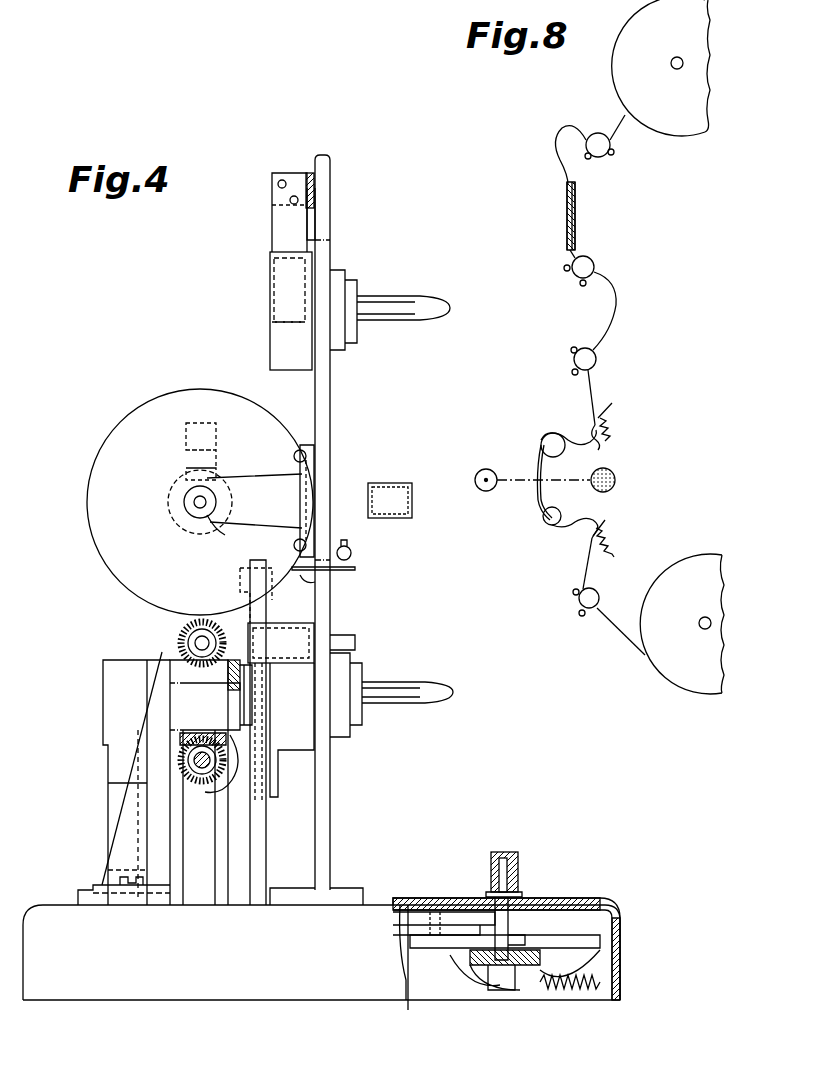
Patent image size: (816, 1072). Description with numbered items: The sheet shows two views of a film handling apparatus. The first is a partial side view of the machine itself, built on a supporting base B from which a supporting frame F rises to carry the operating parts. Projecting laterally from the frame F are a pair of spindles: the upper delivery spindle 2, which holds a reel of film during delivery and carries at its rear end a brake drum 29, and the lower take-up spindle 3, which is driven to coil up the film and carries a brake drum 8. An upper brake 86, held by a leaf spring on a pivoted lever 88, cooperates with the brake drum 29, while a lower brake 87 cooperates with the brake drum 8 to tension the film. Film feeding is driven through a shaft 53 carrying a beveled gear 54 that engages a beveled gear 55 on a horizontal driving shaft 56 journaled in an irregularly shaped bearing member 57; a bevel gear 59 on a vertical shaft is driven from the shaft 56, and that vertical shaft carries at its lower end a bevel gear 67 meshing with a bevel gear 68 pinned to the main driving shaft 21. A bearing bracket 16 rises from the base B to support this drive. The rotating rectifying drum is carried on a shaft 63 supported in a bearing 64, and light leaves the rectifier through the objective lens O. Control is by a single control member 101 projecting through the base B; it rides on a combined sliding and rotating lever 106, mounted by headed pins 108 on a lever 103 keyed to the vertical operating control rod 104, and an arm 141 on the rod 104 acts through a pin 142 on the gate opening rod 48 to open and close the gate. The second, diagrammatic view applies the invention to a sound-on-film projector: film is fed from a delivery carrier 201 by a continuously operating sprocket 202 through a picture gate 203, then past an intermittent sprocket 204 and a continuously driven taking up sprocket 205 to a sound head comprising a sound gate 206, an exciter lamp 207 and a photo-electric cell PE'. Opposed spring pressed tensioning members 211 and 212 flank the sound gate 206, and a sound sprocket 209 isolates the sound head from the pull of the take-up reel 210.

In FIG. 4, the supporting frame F is at (332, 162).
In FIG. 4, the lever 88 is at (315, 220).
In FIG. 4, the upper brake 86 is at (267, 311).
In FIG. 4, the brake drum 29 is at (272, 330).
In FIG. 4, the delivery spindle 2 is at (410, 297).
In FIG. 4, the bearing 64 is at (192, 500).
In FIG. 4, the shaft 63 is at (196, 510).
In FIG. 4, the objective lens O is at (392, 483).
In FIG. 4, the gate opening rod 48 is at (352, 553).
In FIG. 4, the pin 142 is at (355, 569).
In FIG. 4, the arm 141 is at (330, 582).
In FIG. 4, the shaft 53 is at (352, 636).
In FIG. 4, the beveled gear 54 is at (238, 628).
In FIG. 4, the lower brake 87 is at (298, 630).
In FIG. 4, the beveled gear 55 is at (190, 630).
In FIG. 4, the horizontal driving shaft 56 is at (196, 643).
In FIG. 4, the bevel gear 59 is at (160, 652).
In FIG. 4, the bearing member 57 is at (200, 697).
In FIG. 4, the bearing bracket 16 is at (108, 784).
In FIG. 4, the bevel gear 68 is at (205, 785).
In FIG. 4, the main driving shaft 21 is at (210, 775).
In FIG. 4, the bevel gear 67 is at (240, 740).
In FIG. 4, the brake drum 8 is at (300, 748).
In FIG. 4, the take-up spindle 3 is at (405, 692).
In FIG. 4, the operating control rod 104 is at (266, 873).
In FIG. 4, the supporting base B is at (321, 949).
In FIG. 4, the control member 101 is at (518, 855).
In FIG. 4, the headed pin 108 is at (443, 905).
In FIG. 4, the lever 103 is at (406, 905).
In FIG. 4, the combined sliding and rotating lever 106 is at (409, 1000).
In FIG. 8, the delivery carrier 201 is at (678, 130).
In FIG. 8, the continuously operating sprocket 202 is at (602, 158).
In FIG. 8, the picture gate 203 is at (578, 213).
In FIG. 8, the intermittent sprocket 204 is at (594, 262).
In FIG. 8, the taking up sprocket 205 is at (596, 360).
In FIG. 8, the tensioning member 211 is at (600, 437).
In FIG. 8, the sound gate 206 is at (565, 450).
In FIG. 8, the exciter lamp 207 is at (490, 468).
In FIG. 8, the photo-electric cell PE' is at (632, 474).
In FIG. 8, the tensioning member 212 is at (597, 520).
In FIG. 8, the sound sprocket 209 is at (596, 590).
In FIG. 8, the take-up reel 210 is at (683, 560).